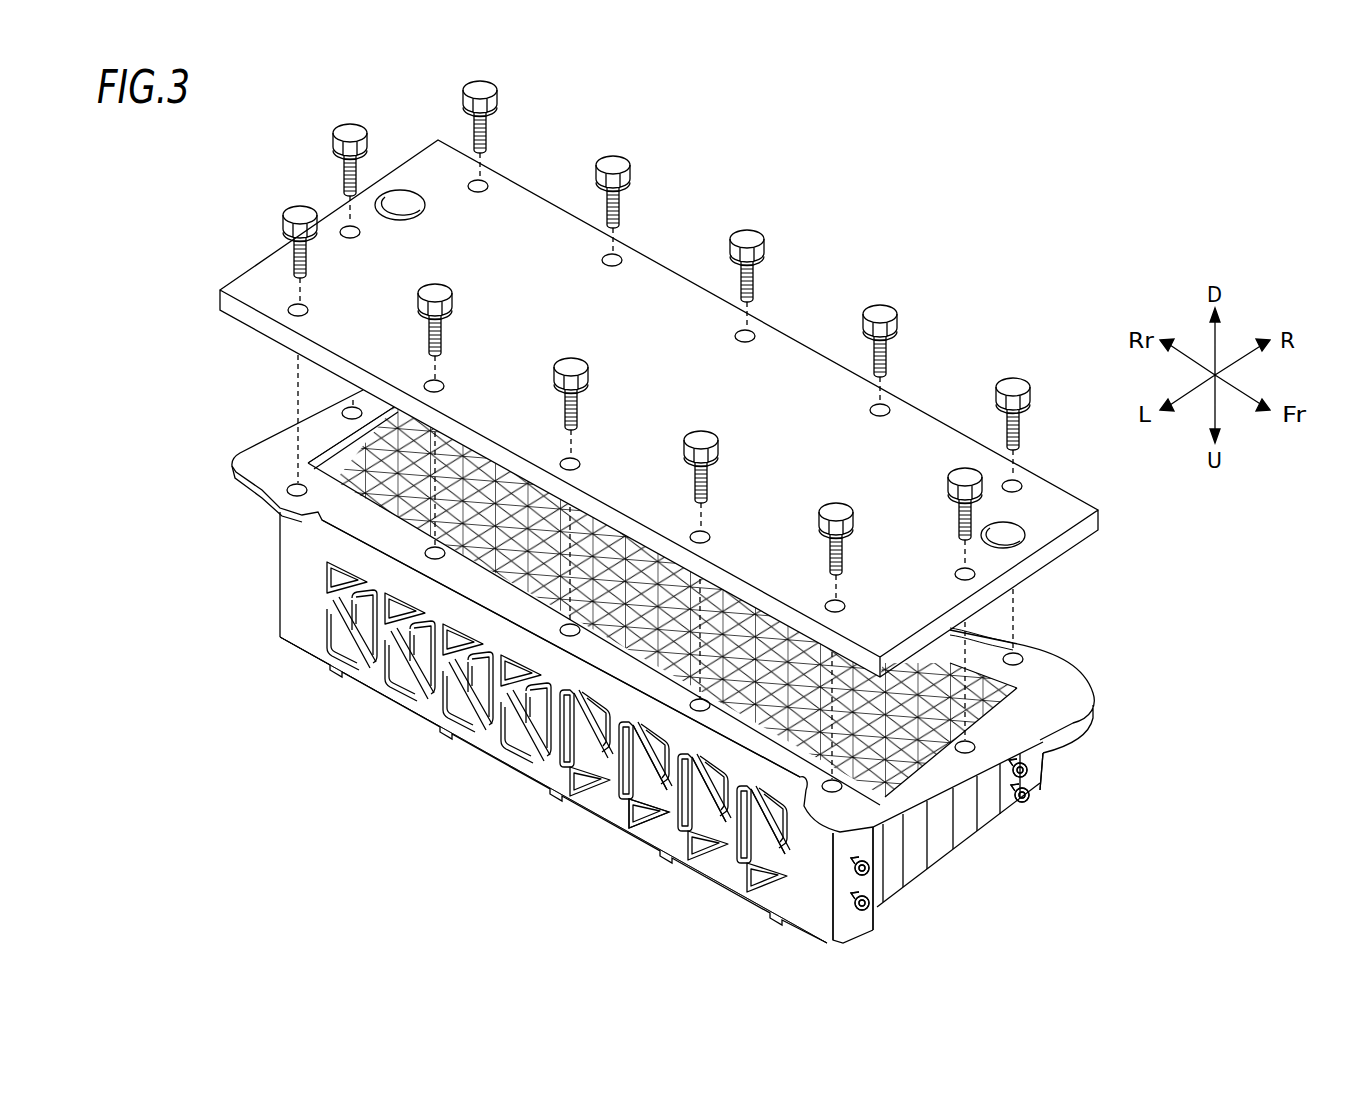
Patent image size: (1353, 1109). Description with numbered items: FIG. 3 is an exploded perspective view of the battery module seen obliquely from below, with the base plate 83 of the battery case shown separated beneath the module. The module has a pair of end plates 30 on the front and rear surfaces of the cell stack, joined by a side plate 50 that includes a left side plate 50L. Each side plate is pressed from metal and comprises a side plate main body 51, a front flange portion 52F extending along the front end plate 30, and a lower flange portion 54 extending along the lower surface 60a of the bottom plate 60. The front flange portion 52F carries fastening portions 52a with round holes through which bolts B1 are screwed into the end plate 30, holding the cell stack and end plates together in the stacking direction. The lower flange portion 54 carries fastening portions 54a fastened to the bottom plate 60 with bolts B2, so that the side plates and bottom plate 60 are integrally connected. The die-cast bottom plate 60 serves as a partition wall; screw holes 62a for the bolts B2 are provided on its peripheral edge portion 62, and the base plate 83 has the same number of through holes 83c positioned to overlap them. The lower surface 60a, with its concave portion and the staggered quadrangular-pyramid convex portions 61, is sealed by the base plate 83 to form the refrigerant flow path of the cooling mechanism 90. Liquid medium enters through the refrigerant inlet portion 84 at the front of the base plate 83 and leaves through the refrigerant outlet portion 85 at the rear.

The base plate 83 is at (640, 302).
The through holes 83c is at (436, 388).
The refrigerant outlet portion 85 is at (400, 192).
The refrigerant inlet portion 84 is at (1010, 543).
The bolts B2 is at (878, 318).
The cooling mechanism 90 is at (415, 475).
The peripheral edge portion 62 is at (480, 598).
The screw holes 62a is at (1022, 659).
The bottom plate 60 is at (773, 900).
The lower surface 60a is at (355, 452).
The side plate 50 is at (432, 707).
The left side plate 50L is at (553, 767).
The side plate main body 51 is at (553, 790).
The lower flange portion 54 is at (517, 617).
The fastening portions 54a is at (637, 807).
The convex portions 61 is at (727, 783).
The end plates 30 is at (967, 843).
The front flange portion 52F is at (843, 887).
The bolts B1 is at (877, 907).
The fastening portions 52a is at (940, 834).